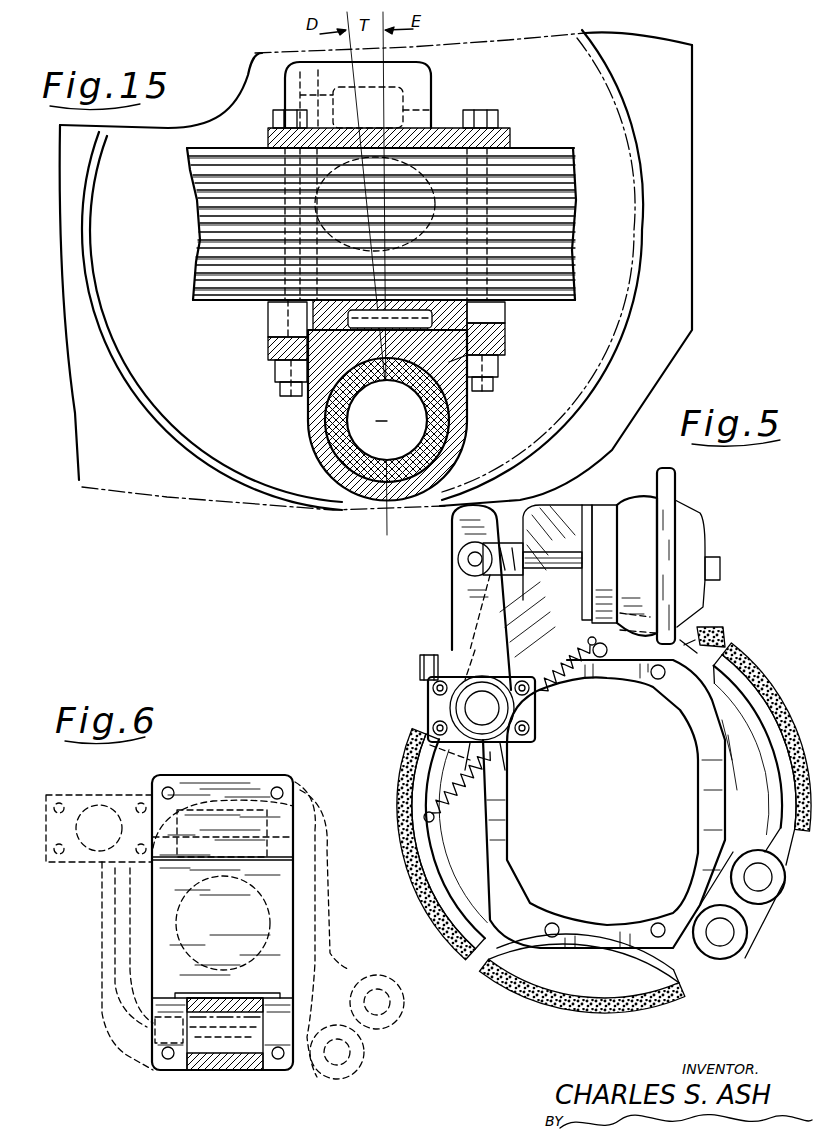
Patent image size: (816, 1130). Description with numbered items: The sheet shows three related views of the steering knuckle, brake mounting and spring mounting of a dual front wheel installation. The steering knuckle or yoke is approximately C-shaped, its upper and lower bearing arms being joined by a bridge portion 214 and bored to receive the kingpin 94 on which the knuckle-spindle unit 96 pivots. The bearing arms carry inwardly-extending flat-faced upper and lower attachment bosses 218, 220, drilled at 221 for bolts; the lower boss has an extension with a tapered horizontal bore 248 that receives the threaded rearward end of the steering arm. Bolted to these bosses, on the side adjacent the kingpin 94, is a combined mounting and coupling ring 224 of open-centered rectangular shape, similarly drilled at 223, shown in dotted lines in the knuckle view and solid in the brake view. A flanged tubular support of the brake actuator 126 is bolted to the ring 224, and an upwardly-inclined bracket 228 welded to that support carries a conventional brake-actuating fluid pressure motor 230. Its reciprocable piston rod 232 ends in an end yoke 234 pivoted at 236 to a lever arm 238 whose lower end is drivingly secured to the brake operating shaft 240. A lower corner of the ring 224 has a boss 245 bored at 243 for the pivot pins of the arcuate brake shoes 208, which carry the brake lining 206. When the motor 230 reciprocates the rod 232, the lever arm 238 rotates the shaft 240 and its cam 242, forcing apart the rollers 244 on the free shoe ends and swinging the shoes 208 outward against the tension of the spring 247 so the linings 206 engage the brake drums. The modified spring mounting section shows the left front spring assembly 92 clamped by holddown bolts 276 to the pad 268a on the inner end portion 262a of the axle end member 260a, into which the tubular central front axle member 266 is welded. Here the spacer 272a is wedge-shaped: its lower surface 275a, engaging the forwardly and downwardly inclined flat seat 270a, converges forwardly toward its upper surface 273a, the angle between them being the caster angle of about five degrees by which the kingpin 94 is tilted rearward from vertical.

In FIG. 15, the spring assembly 92 is at (545, 143).
In FIG. 15, the kingpin 94 is at (288, 73).
In FIG. 15, the knuckle-spindle unit 96 is at (440, 80).
In FIG. 6, the knuckle-spindle unit 96 is at (152, 940).
In FIG. 15, the holddown bolt 276 is at (272, 118).
In FIG. 15, the upper surface 273a is at (308, 283).
In FIG. 15, the spacer 272a is at (270, 327).
In FIG. 15, the pad 268a is at (270, 347).
In FIG. 15, the lower surface 275a is at (470, 320).
In FIG. 15, the flat seat 270a is at (312, 388).
In FIG. 15, the axle end member 260a is at (310, 433).
In FIG. 15, the inner end portion 262a is at (467, 403).
In FIG. 15, the central front axle member 266 is at (449, 418).
In FIG. 5, the brake actuator 126 is at (620, 500).
In FIG. 5, the bracket 228 is at (573, 512).
In FIG. 5, the brake-actuating fluid pressure motor 230 is at (683, 500).
In FIG. 5, the piston rod 232 is at (530, 535).
In FIG. 5, the end yoke 234 is at (477, 548).
In FIG. 5, the pivot 236 is at (466, 560).
In FIG. 5, the lever arm 238 is at (462, 582).
In FIG. 5, the cam 242 is at (447, 633).
In FIG. 5, the brake operating shaft 240 is at (470, 707).
In FIG. 5, the roller 244 is at (425, 762).
In FIG. 5, the drilled hole 223 is at (563, 686).
In FIG. 5, the combined mounting and coupling ring 224 is at (733, 738).
In FIG. 6, the combined mounting and coupling ring 224 is at (347, 920).
In FIG. 5, the boss 245 is at (780, 824).
In FIG. 6, the boss 245 is at (360, 962).
In FIG. 5, the spring 247 is at (478, 797).
In FIG. 5, the bore 243 is at (735, 937).
In FIG. 5, the brake lining 206 is at (722, 636).
In FIG. 5, the brake shoe 208 is at (764, 676).
In FIG. 6, the upper attachment boss 218 is at (152, 783).
In FIG. 6, the drilled hole 221 is at (169, 786).
In FIG. 6, the bridge portion 214 is at (158, 892).
In FIG. 6, the lower attachment boss 220 is at (278, 1060).
In FIG. 6, the tapered horizontal bore 248 is at (203, 1055).